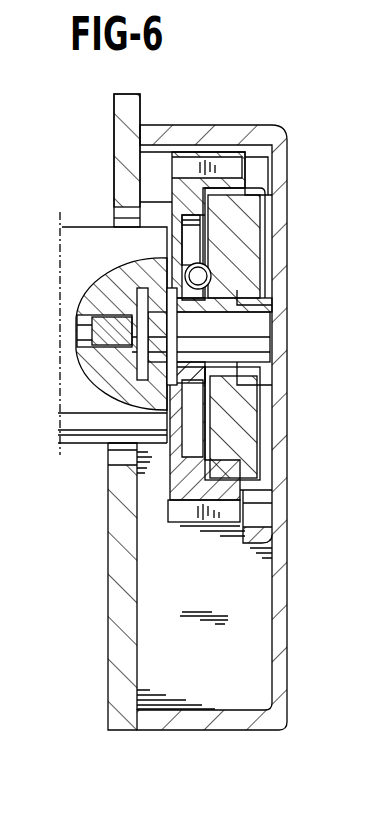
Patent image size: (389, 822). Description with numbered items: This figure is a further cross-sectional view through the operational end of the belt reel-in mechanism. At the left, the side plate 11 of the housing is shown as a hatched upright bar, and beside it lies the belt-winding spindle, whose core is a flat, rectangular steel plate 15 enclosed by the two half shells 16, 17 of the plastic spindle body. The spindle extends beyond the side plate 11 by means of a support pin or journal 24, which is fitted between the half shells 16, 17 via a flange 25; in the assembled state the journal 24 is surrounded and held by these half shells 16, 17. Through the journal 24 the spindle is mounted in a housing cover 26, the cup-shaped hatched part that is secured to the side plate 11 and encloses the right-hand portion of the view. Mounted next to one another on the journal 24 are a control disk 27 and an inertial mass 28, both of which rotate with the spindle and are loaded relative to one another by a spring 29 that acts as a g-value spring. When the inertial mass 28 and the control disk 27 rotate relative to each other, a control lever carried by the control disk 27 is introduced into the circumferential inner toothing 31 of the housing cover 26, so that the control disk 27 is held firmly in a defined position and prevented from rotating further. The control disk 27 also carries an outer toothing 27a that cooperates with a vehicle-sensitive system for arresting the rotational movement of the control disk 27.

The side plate 11 is at (120, 106).
The steel plate 15 is at (96, 328).
The half shell 16 is at (75, 440).
The half shell 17 is at (73, 245).
The support pin or journal 24 is at (262, 327).
The flange 25 is at (138, 352).
The housing cover 26 is at (277, 600).
The control disk 27 is at (184, 182).
The outer toothing 27a is at (213, 163).
The inertial mass 28 is at (252, 462).
The spring 29 is at (188, 282).
The circumferential inner toothing 31 is at (260, 516).